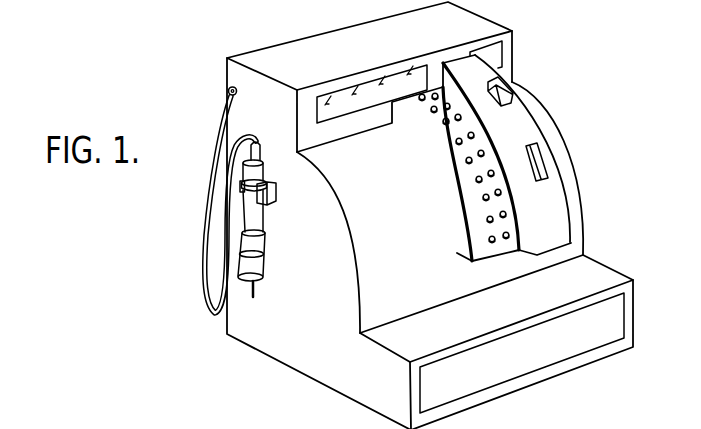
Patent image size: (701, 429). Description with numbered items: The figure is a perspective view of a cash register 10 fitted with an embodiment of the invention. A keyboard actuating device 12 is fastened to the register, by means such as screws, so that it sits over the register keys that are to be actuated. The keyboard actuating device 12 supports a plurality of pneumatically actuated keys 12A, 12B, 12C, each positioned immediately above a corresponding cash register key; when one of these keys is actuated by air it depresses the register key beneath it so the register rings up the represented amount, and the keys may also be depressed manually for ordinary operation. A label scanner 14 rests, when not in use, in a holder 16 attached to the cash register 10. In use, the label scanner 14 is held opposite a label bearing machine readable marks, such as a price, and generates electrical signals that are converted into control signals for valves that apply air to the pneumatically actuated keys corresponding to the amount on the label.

The cash register 10 is at (318, 36).
The keyboard actuating device 12 is at (474, 158).
The pneumatically actuated key 12A is at (421, 103).
The pneumatically actuated key 12B is at (433, 114).
The pneumatically actuated key 12C is at (446, 126).
The label scanner 14 is at (265, 247).
The holder 16 is at (275, 193).